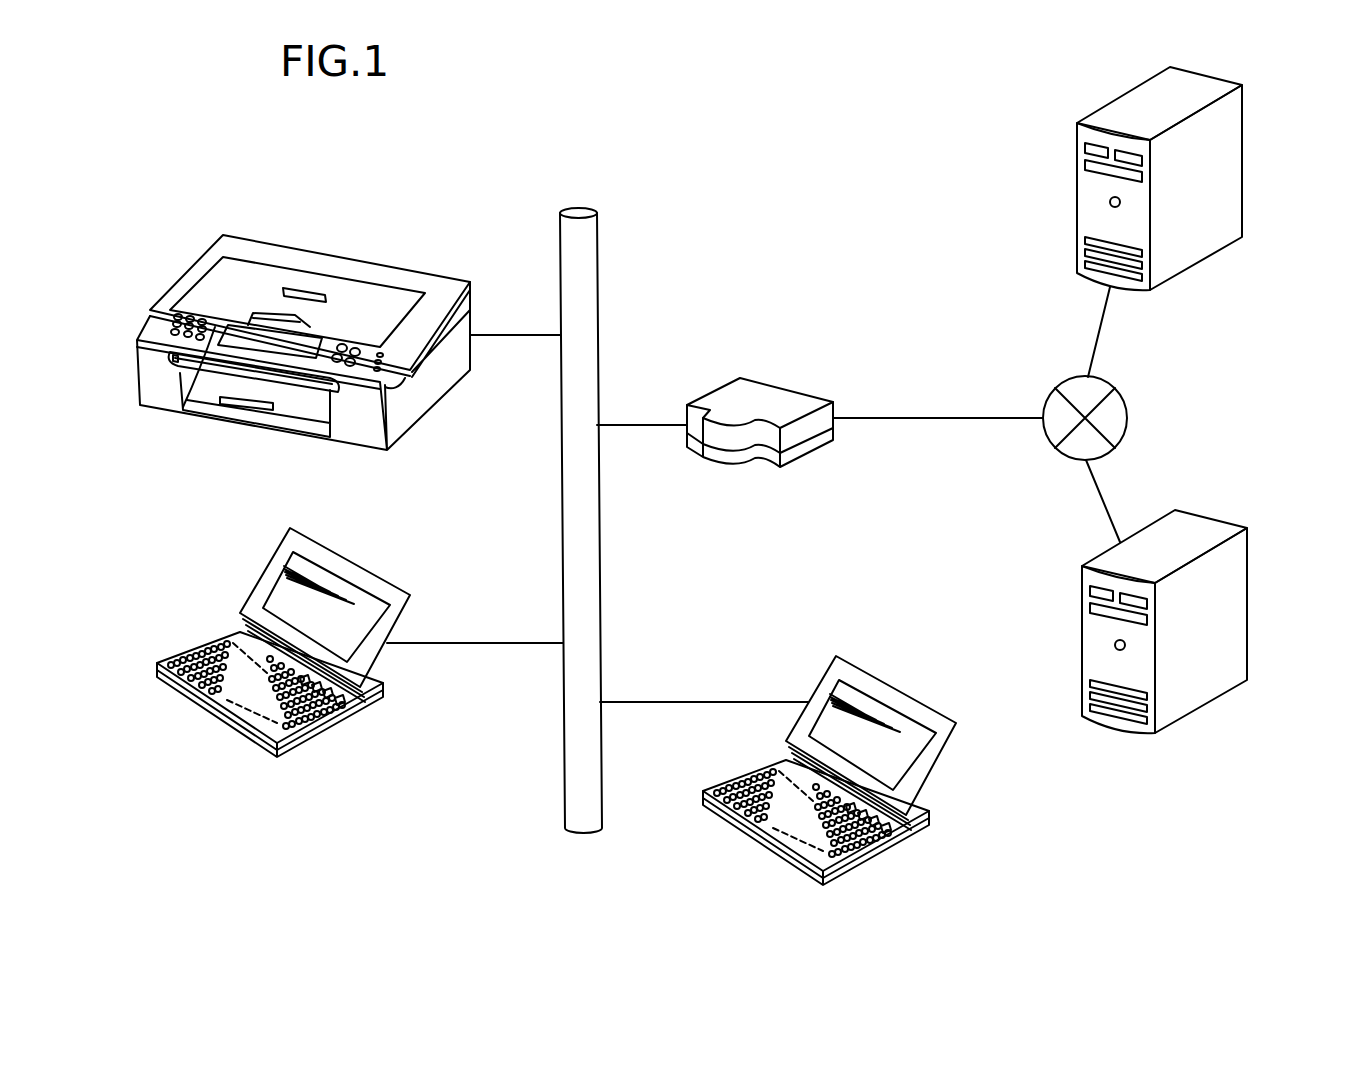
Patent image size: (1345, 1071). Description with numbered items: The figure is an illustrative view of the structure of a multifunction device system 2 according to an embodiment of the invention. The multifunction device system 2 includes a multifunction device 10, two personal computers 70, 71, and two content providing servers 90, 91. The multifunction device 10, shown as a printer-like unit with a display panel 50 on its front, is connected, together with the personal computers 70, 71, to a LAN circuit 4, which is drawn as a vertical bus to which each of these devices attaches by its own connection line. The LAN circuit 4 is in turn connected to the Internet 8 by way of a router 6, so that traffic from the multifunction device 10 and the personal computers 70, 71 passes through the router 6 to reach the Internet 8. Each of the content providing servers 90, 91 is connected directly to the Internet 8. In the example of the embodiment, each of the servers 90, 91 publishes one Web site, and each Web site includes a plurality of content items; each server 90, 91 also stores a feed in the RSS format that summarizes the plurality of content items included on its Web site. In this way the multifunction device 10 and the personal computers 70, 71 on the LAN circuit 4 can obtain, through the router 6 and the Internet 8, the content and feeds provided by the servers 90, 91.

The multifunction device system 2 is at (712, 465).
The LAN circuit 4 is at (598, 313).
The router 6 is at (780, 388).
The Internet 8 is at (1130, 413).
The multifunction device 10 is at (387, 263).
The display panel 50 is at (183, 410).
The personal computer 70 is at (387, 580).
The personal computer 71 is at (937, 708).
The content providing server 90 is at (1247, 158).
The content providing server 91 is at (1253, 600).